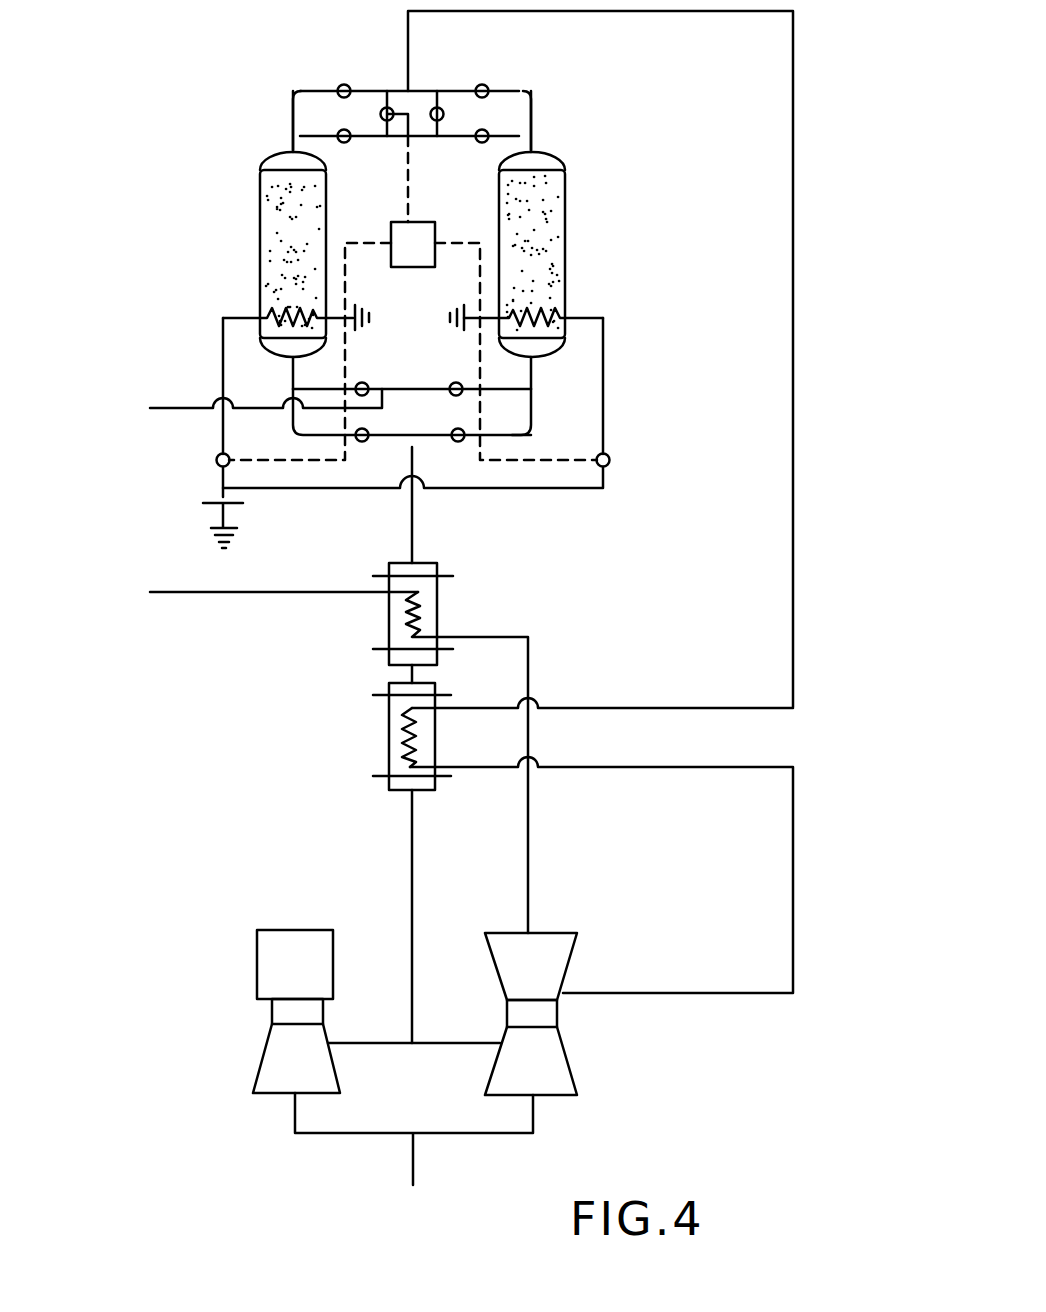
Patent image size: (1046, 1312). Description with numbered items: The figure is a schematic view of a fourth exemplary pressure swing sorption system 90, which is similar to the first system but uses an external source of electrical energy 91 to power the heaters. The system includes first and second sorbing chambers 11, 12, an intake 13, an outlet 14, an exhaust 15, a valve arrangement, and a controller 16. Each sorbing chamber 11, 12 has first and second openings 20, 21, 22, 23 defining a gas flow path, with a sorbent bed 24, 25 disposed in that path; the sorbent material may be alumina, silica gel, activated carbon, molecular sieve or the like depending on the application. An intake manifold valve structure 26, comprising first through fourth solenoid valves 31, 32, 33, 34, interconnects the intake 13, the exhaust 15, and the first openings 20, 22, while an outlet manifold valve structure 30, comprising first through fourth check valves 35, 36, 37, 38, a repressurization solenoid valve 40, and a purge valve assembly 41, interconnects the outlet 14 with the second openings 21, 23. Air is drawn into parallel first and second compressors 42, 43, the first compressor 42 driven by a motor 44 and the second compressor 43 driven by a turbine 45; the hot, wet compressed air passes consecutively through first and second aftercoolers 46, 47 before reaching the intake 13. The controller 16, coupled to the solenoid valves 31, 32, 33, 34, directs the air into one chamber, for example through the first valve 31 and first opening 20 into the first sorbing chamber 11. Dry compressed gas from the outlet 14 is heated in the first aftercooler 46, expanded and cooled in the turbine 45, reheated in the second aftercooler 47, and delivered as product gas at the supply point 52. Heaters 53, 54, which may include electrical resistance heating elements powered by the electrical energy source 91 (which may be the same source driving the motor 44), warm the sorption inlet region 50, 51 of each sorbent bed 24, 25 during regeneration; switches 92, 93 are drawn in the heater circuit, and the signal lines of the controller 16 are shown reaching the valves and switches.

The first sorbing chamber 11 is at (260, 196).
The second sorbing chamber 12 is at (565, 183).
The intake 13 is at (428, 410).
The outlet 14 is at (410, 85).
The exhaust 15 is at (175, 402).
The controller 16 is at (399, 268).
The first opening of first sorbing chamber 20 is at (300, 360).
The second opening of first sorbing chamber 21 is at (290, 152).
The first opening of second sorbing chamber 22 is at (537, 390).
The second opening of second sorbing chamber 23 is at (532, 148).
The sorbent bed of first sorbing chamber 24 is at (297, 252).
The sorbent bed of second sorbing chamber 25 is at (530, 212).
The intake manifold valve structure 26 is at (560, 413).
The outlet manifold valve structure 30 is at (543, 90).
The first solenoid valve 31 is at (388, 446).
The second solenoid valve 32 is at (446, 446).
The third solenoid valve 33 is at (452, 384).
The fourth solenoid valve 34 is at (366, 384).
The first check valve 35 is at (330, 130).
The second check valve 36 is at (527, 120).
The third check valve 37 is at (487, 86).
The fourth check valve 38 is at (340, 85).
The repressurization solenoid valve 40 is at (392, 120).
The purge valve assembly 41 is at (432, 120).
The first compressor 42 is at (265, 1075).
The second compressor 43 is at (560, 1080).
The motor 44 is at (258, 970).
The turbine 45 is at (562, 965).
The first aftercooler 46 is at (389, 740).
The second aftercooler 47 is at (389, 628).
The sorption inlet region of first sorbent bed 50 is at (295, 290).
The sorption inlet region of second sorbent bed 51 is at (530, 295).
The supply point 52 is at (178, 590).
The heater of first sorbing chamber 53 is at (270, 310).
The heater of second sorbing chamber 54 is at (527, 316).
The fourth exemplary pressure swing sorption system 90 is at (682, 122).
The source of electrical energy 91 is at (230, 508).
The switch for first heater 92 is at (216, 460).
The switch for second heater 93 is at (610, 456).